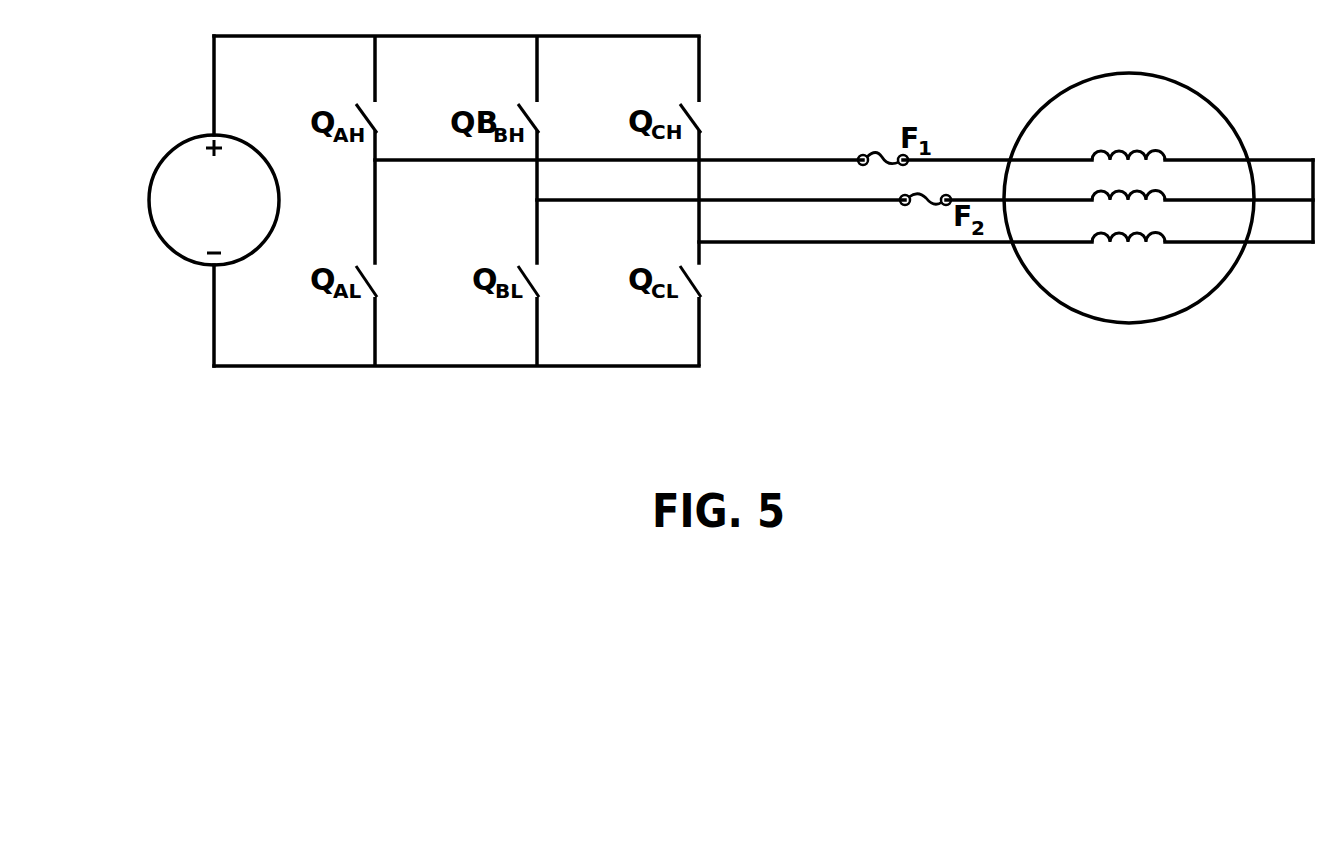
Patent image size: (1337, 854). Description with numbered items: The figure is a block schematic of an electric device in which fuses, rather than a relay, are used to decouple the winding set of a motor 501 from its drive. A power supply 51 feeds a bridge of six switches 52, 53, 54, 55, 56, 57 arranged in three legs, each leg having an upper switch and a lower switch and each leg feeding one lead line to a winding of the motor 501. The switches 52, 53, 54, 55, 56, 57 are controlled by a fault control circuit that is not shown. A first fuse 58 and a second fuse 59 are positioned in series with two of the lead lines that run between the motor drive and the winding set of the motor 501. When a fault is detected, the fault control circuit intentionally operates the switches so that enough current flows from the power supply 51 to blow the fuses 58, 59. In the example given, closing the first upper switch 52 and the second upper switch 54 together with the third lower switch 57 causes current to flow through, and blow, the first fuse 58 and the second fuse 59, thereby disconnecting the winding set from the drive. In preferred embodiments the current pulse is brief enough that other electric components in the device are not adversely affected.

The power supply 51 is at (182, 161).
The upper switch QAH 52 is at (375, 128).
The switch 53 is at (376, 291).
The upper switch QBH 54 is at (538, 124).
The switch 55 is at (540, 291).
The switch 56 is at (699, 124).
The lower switch QCL 57 is at (699, 288).
The fuse F1 58 is at (874, 153).
The fuse F2 59 is at (935, 207).
The motor 501 is at (1193, 107).